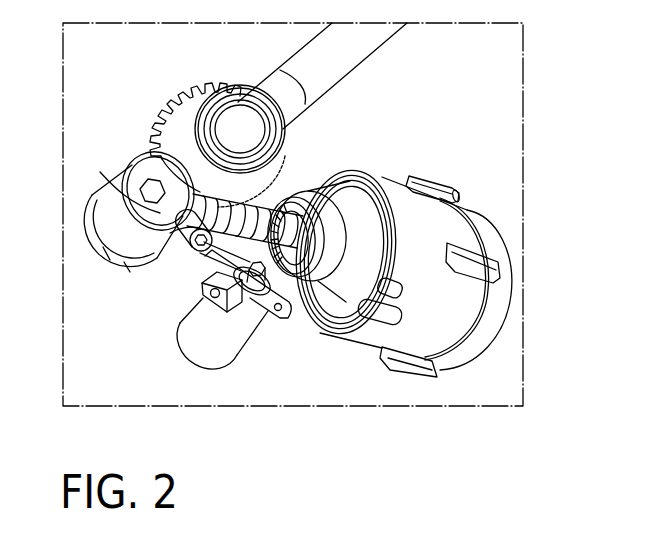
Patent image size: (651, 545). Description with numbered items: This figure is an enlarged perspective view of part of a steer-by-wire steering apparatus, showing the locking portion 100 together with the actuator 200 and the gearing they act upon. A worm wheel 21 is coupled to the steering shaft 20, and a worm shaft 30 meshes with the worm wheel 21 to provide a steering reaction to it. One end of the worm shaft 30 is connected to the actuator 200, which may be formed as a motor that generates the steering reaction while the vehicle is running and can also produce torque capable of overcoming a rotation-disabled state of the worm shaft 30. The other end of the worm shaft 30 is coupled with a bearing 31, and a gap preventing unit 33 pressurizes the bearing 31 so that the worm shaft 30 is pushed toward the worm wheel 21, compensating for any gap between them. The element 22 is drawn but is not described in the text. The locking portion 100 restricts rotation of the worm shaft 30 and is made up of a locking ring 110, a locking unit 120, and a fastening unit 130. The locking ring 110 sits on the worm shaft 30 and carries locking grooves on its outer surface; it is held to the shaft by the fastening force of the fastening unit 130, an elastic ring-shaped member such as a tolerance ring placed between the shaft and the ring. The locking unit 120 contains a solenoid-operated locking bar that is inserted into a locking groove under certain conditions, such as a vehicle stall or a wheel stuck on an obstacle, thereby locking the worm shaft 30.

The steering shaft 20 is at (366, 46).
The worm wheel 21 is at (167, 111).
The cup member 22 is at (104, 193).
The gap preventing unit 33 is at (160, 213).
The worm shaft 30 is at (198, 251).
The bearing 31 is at (172, 238).
The locking portion 100 is at (351, 285).
The locking ring 110 is at (312, 187).
The locking unit 120 is at (259, 336).
The fastening unit 130 is at (305, 318).
The actuator 200 is at (435, 206).